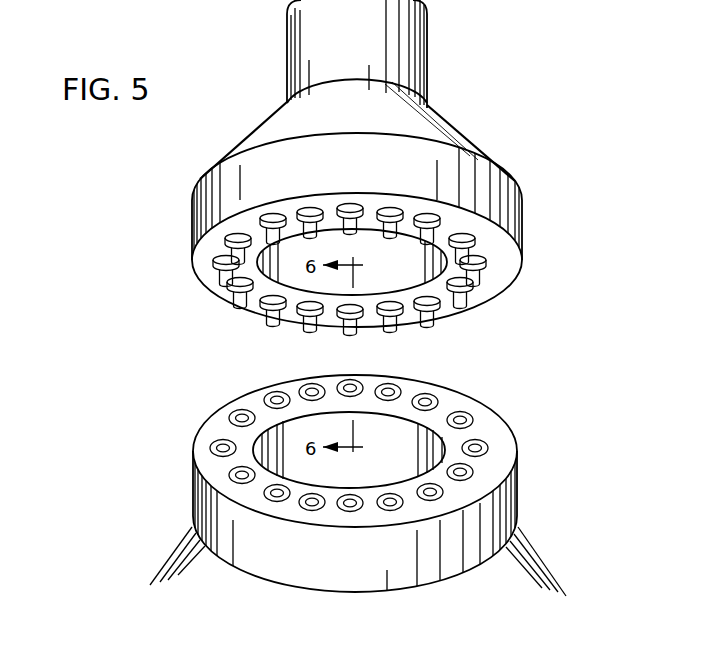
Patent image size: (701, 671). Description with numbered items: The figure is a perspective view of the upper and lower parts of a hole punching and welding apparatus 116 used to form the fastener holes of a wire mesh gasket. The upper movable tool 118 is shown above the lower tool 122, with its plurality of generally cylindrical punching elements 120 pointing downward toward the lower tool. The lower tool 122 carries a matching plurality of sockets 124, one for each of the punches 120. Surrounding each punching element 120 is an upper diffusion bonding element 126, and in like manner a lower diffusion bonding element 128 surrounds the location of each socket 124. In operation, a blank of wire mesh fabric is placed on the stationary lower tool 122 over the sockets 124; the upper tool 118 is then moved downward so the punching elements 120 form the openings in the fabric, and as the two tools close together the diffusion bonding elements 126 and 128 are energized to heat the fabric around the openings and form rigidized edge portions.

The hole punching and welding apparatus 116 is at (552, 333).
The upper movable tool 118 is at (445, 140).
The punching elements 120 is at (445, 323).
The lower tool 122 is at (503, 532).
The sockets 124 is at (430, 400).
The upper diffusion bonding element 126 is at (470, 225).
The lower diffusion bonding element 128 is at (463, 472).